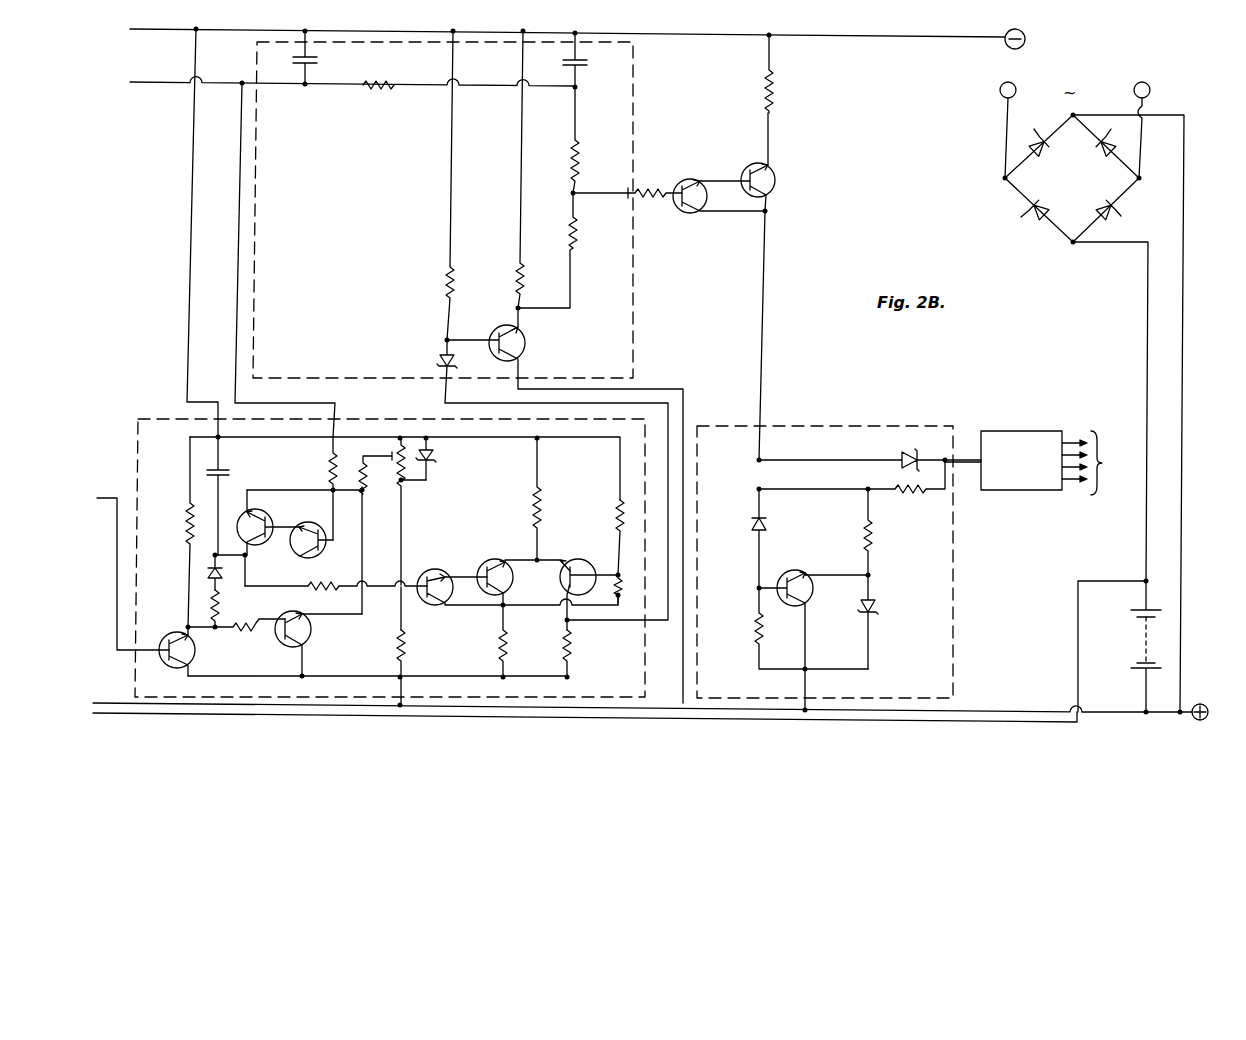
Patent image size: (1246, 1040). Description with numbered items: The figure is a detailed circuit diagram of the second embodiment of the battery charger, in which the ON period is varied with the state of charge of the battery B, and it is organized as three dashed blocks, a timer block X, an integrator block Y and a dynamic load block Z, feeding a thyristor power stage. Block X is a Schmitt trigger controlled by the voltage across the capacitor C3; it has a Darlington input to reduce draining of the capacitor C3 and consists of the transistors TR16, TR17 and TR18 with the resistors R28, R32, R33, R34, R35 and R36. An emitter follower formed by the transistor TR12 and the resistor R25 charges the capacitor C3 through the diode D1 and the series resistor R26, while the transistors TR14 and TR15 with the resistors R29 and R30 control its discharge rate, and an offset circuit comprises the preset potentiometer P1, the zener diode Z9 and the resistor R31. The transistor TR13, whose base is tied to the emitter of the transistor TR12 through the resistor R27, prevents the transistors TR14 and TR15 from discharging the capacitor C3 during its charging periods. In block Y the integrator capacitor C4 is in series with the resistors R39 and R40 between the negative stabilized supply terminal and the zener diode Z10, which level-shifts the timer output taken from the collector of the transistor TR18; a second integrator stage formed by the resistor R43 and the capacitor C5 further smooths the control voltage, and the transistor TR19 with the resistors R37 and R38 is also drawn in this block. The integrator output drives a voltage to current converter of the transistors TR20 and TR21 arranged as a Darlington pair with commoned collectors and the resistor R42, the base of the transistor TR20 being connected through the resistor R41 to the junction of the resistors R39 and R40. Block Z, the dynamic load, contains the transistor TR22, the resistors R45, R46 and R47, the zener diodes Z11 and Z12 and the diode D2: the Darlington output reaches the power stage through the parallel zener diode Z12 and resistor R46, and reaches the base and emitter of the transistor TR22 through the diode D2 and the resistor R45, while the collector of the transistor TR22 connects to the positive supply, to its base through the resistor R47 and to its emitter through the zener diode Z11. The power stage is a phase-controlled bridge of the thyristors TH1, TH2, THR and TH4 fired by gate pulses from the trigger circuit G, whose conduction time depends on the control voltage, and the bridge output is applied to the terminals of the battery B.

The block Y is at (443, 210).
The block X is at (390, 547).
The block Z is at (825, 562).
The capacitor C3 is at (225, 468).
The capacitor C4 is at (588, 66).
The capacitor C5 is at (322, 61).
The resistor R25 is at (186, 532).
The series resistor R26 is at (220, 603).
The resistor R27 is at (245, 633).
The resistor R28 is at (322, 594).
The resistor R29 is at (331, 463).
The resistor R30 is at (377, 533).
The resistor R31 is at (405, 643).
The resistor R32 is at (508, 643).
The resistor R33 is at (570, 648).
The resistor R34 is at (545, 500).
The resistor R35 is at (618, 508).
The resistor R36 is at (622, 597).
The resistor R37 is at (445, 291).
The resistor R38 is at (517, 285).
The resistor R39 is at (578, 163).
The resistor R40 is at (575, 236).
The resistor R41 is at (657, 177).
The resistor R42 is at (771, 92).
The resistor R43 is at (384, 89).
The resistor R45 is at (872, 540).
The resistor R46 is at (905, 494).
The resistor R47 is at (757, 633).
The preset potentiometer P1 is at (393, 466).
The diode D1 is at (205, 573).
The diode D2 is at (770, 524).
The zener diode Z9 is at (434, 455).
The zener diode Z10 is at (440, 361).
The zener diode Z11 is at (880, 602).
The zener diode Z12 is at (905, 452).
The transistor TR12 is at (162, 663).
The transistor TR13 is at (313, 632).
The transistor TR14 is at (258, 509).
The transistor TR15 is at (307, 559).
The transistor TR16 is at (435, 557).
The transistor TR17 is at (490, 553).
The transistor TR18 is at (578, 562).
The transistor TR19 is at (527, 345).
The transistor TR20 is at (687, 215).
The transistor TR21 is at (775, 182).
The transistor TR22 is at (807, 560).
The thyristor TH1 is at (1045, 155).
The thyristor TH2 is at (1102, 160).
The thyristor THR is at (1020, 225).
The thyristor TH4 is at (1112, 218).
The trigger circuit G is at (1041, 463).
The battery B is at (1143, 640).